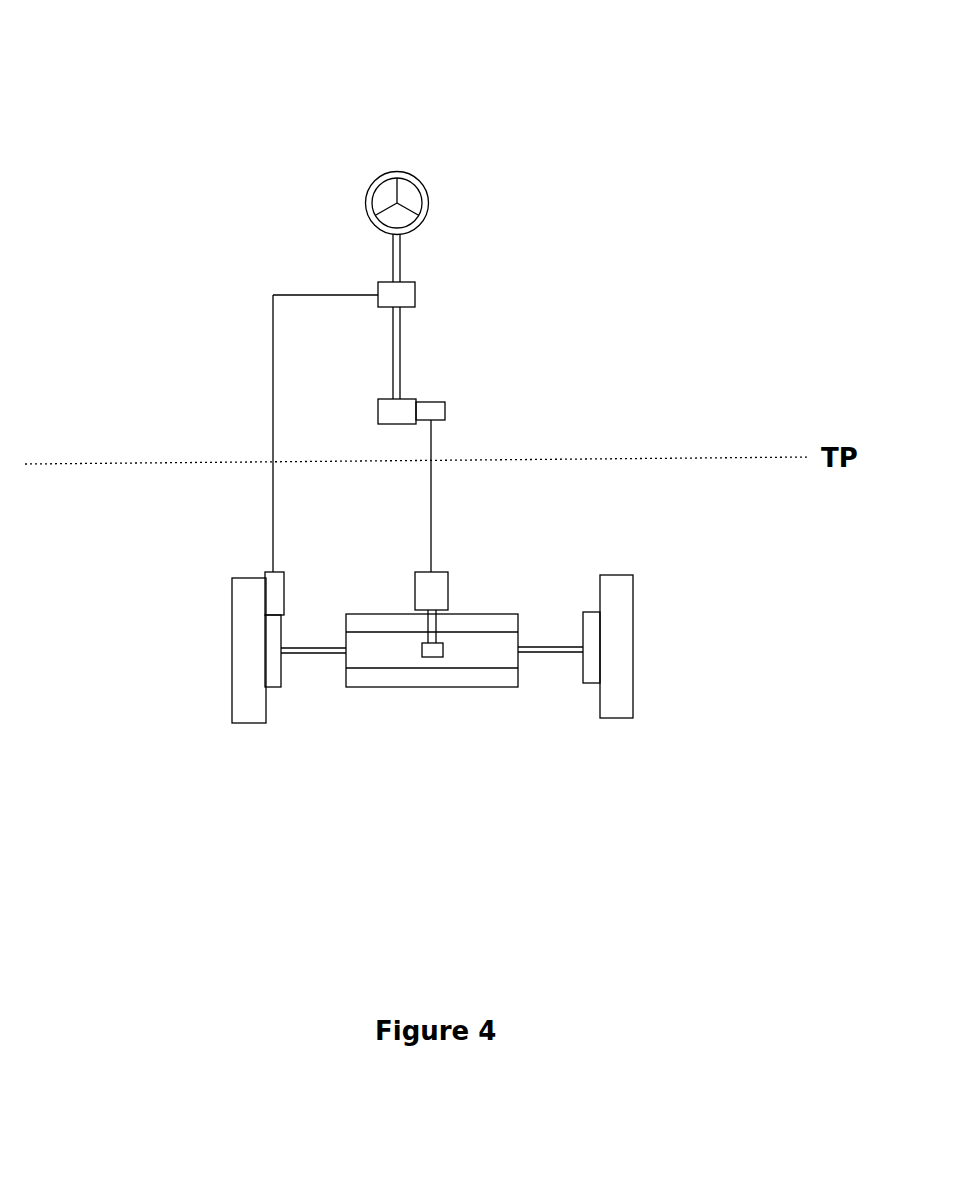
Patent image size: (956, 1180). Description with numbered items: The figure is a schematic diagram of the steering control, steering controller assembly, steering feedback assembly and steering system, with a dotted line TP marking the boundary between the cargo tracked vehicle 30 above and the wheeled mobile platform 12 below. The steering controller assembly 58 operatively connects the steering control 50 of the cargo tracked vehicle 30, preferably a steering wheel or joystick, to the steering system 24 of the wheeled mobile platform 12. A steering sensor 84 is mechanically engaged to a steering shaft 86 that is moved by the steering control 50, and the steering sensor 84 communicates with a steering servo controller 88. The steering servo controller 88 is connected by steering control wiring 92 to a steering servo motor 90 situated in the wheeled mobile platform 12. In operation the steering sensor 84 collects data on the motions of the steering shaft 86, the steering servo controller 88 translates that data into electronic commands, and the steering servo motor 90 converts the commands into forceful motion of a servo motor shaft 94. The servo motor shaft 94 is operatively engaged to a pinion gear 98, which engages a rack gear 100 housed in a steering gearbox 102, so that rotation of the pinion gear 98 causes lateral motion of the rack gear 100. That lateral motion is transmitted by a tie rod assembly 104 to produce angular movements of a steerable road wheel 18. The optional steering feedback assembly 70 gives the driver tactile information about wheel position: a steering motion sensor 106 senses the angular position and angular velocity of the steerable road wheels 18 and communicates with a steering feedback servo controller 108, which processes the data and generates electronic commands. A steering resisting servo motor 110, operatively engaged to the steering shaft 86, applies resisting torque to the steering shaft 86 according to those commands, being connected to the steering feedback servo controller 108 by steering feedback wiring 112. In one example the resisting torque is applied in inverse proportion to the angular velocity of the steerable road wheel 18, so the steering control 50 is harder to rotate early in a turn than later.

The wheeled mobile platform 12 is at (763, 455).
The steerable road wheel 18 is at (232, 700).
The steering system 24 is at (573, 819).
The cargo tracked vehicle 30 is at (763, 455).
The steering control 50 is at (408, 175).
The steering controller assembly 58 is at (457, 493).
The steering feedback assembly 70 is at (240, 356).
The steering sensor 84 is at (407, 400).
The steering shaft 86 is at (402, 252).
The steering servo controller 88 is at (445, 407).
The steering servo motor 90 is at (444, 576).
The steering control wiring 92 is at (431, 528).
The servo motor shaft 94 is at (440, 632).
The pinion gear 98 is at (428, 657).
The rack gear 100 is at (383, 665).
The steering gearbox 102 is at (470, 686).
The tie rod assembly 104 is at (563, 655).
The steering motion sensor 106 is at (277, 688).
The steering feedback servo controller 108 is at (284, 585).
The steering resisting servo motor 110 is at (378, 283).
The steering feedback wiring 112 is at (272, 518).